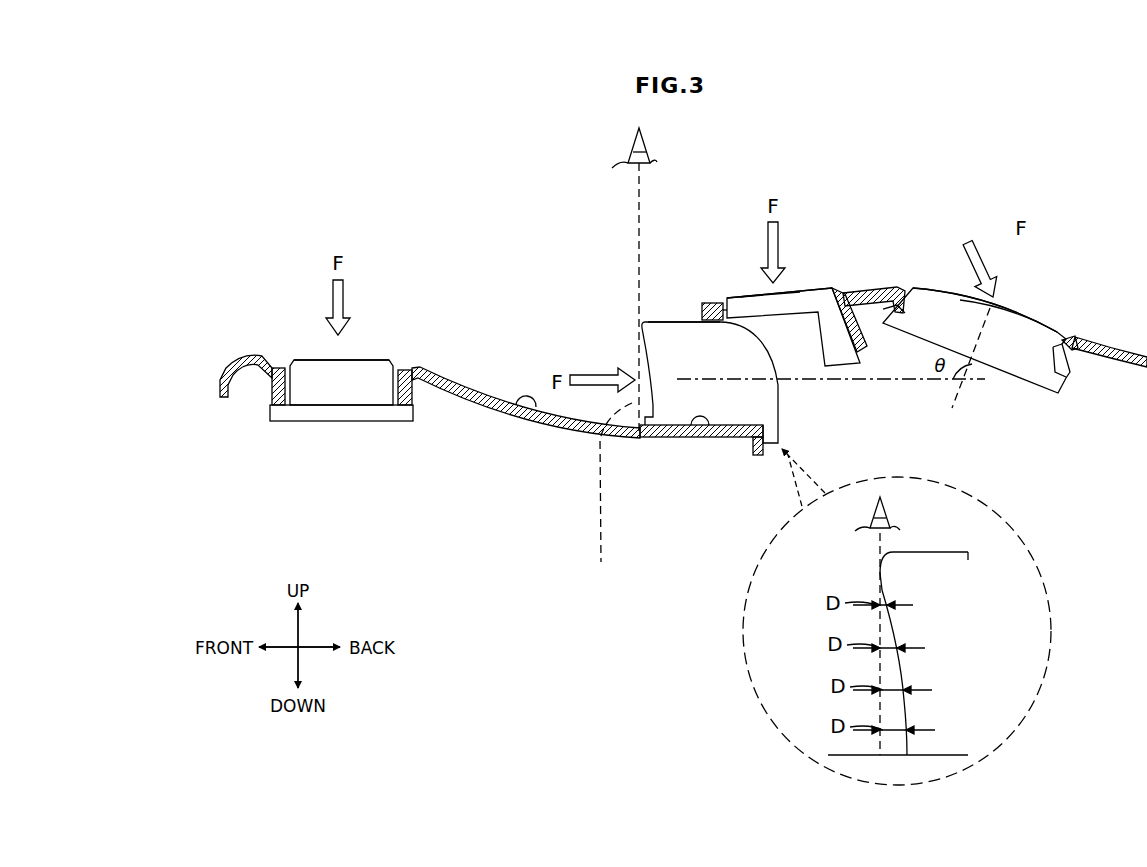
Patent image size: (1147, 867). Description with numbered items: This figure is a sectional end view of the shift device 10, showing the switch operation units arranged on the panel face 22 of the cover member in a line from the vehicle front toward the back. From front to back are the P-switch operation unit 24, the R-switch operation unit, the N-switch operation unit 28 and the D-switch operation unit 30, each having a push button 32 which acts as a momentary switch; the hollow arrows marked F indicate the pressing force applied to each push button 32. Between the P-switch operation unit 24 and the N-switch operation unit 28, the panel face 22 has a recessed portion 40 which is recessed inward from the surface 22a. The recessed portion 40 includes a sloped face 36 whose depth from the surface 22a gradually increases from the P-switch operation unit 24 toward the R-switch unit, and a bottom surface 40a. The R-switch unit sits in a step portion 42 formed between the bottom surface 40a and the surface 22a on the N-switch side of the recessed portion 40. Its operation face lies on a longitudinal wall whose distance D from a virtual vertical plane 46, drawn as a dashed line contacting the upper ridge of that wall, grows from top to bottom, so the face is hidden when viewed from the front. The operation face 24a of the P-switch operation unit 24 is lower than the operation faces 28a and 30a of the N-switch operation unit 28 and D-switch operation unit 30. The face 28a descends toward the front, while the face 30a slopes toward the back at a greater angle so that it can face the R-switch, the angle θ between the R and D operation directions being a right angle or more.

The shift device 10 is at (972, 190).
The panel face 22 is at (881, 291).
The surface 22a is at (712, 302).
The P-switch operation unit 24 is at (297, 340).
The operation face of the P-switch operation unit 24a is at (338, 358).
The N-switch operation unit 28 is at (831, 281).
The operation face of the N-switch operation unit 28a is at (778, 296).
The D-switch operation unit 30 is at (1040, 310).
The operation face of the D-switch operation unit 30a is at (997, 303).
The push button 32 is at (365, 358).
The sloped face 36 is at (515, 411).
The recessed portion 40 is at (490, 372).
The bottom surface 40a is at (703, 437).
The step portion 42 is at (728, 362).
The virtual vertical plane 46 is at (607, 497).